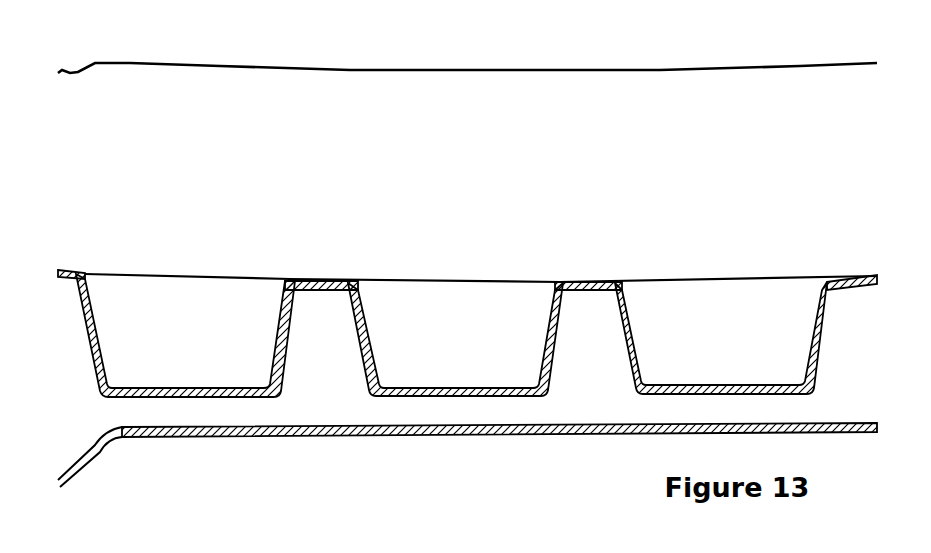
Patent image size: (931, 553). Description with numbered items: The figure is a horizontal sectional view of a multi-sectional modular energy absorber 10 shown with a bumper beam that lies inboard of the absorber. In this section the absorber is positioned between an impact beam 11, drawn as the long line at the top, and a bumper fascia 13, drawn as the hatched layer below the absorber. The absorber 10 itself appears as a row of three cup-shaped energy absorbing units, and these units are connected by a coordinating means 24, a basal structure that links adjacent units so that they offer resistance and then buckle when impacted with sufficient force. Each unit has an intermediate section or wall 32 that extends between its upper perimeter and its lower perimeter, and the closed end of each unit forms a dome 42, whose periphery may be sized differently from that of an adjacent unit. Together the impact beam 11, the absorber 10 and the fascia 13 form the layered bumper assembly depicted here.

The impact beam 11 is at (531, 90).
The dome 42 is at (150, 397).
The means for coordinating 24 is at (342, 285).
The multi-sectional modular energy absorber 10 is at (468, 392).
The bumper fascia 13 is at (525, 423).
The intermediate section or wall 32 is at (622, 337).